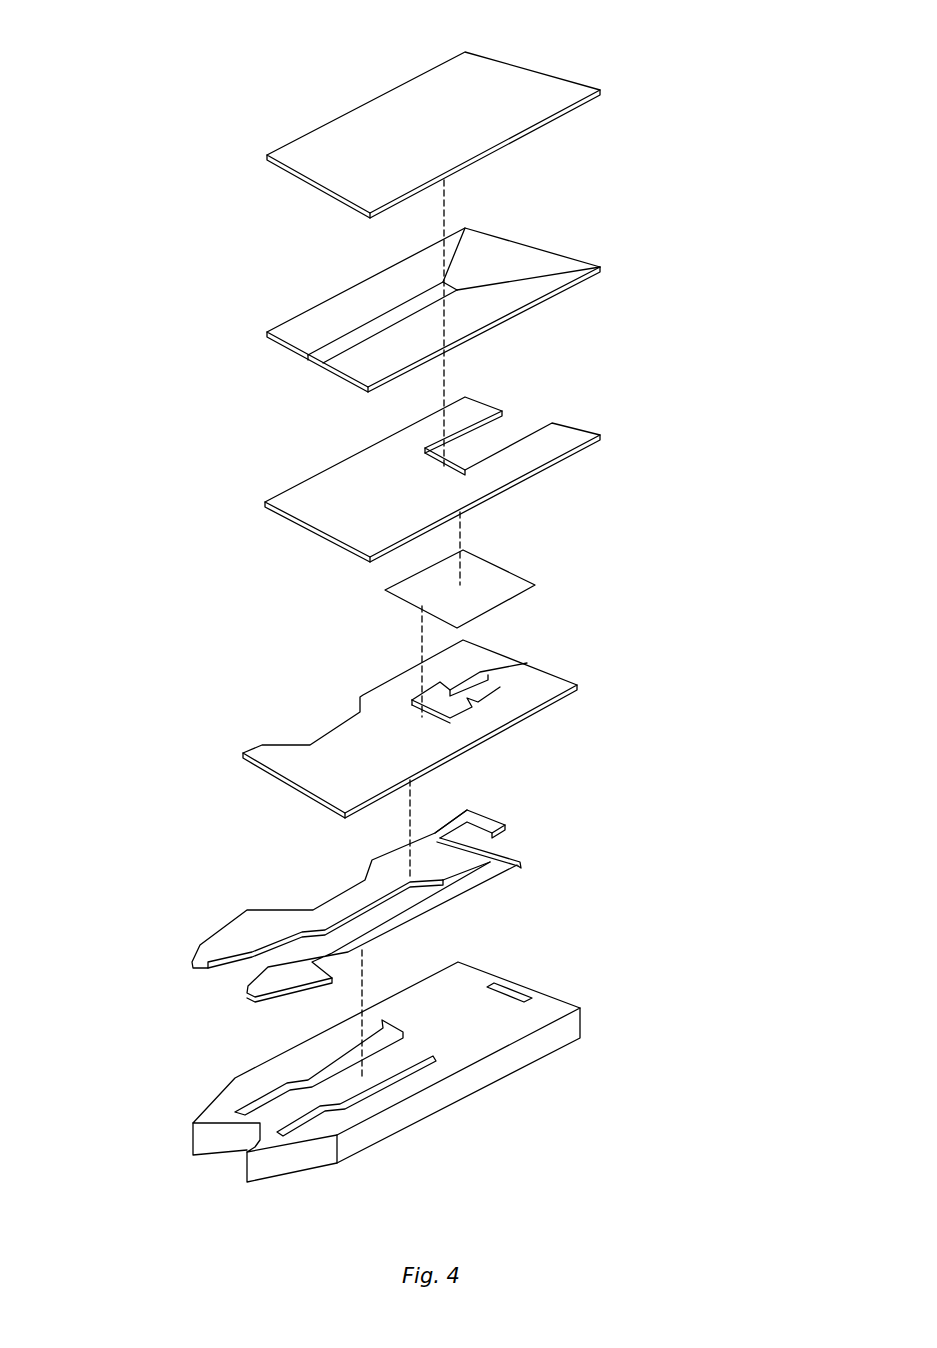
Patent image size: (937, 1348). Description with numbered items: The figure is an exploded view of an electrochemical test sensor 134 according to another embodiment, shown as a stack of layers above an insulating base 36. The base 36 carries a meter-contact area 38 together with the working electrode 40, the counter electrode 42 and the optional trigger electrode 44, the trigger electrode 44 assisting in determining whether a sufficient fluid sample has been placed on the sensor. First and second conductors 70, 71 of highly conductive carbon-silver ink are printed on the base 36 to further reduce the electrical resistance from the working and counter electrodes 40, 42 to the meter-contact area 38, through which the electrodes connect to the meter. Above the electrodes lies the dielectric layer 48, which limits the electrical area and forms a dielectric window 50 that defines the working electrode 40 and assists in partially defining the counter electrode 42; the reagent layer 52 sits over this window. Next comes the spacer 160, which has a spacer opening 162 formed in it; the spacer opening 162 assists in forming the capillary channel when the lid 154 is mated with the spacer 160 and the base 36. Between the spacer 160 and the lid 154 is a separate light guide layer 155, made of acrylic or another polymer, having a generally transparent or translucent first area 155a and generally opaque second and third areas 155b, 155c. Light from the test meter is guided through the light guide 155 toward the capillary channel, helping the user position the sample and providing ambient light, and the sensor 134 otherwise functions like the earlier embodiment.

The electrochemical test sensor 134 is at (100, 43).
The lid 154 is at (303, 99).
The light guide layer 155 is at (303, 271).
The first area 155a is at (308, 355).
The second area 155b is at (290, 318).
The third area 155c is at (556, 285).
The spacer 160 is at (280, 457).
The spacer opening 162 is at (535, 414).
The reagent layer 52 is at (514, 546).
The dielectric layer 48 is at (589, 657).
The dielectric window 50 is at (494, 675).
The meter-contact area 38 is at (218, 990).
The working electrode 40 is at (483, 848).
The counter electrode 42 is at (449, 862).
The insulating base 36 is at (522, 1104).
The trigger electrode 44 is at (508, 990).
The second conductor 71 is at (240, 1105).
The first conductor 70 is at (355, 1100).